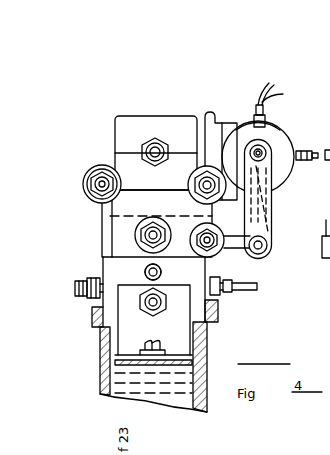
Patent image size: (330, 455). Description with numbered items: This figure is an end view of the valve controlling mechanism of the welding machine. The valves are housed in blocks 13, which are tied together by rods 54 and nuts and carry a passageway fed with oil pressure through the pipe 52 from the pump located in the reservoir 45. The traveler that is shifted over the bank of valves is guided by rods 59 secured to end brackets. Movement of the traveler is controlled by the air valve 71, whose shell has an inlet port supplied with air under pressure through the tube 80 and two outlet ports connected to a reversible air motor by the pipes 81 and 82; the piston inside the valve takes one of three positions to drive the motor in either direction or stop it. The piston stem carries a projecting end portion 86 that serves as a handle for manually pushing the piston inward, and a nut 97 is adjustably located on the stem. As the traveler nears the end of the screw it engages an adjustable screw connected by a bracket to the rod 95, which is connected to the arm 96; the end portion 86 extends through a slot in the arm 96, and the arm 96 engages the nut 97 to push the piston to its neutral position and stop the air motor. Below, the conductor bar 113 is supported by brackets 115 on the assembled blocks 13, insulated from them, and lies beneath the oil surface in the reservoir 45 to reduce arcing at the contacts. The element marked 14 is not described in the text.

The rods 59 is at (101, 178).
The projecting end portion 86 is at (254, 148).
The nut 97 is at (257, 150).
The pipe 81 is at (270, 82).
The pipe 82 is at (283, 92).
The air valve 71 is at (270, 128).
The tube 80 is at (311, 150).
The arm 96 is at (329, 200).
The rod 95 is at (270, 256).
The rods 54 is at (149, 297).
The pipe 52 is at (162, 273).
The blocks 13 is at (207, 278).
The nut 14 is at (239, 293).
The brackets 115 is at (173, 328).
The reservoir 45 is at (208, 347).
The conductor bar 113 is at (196, 374).